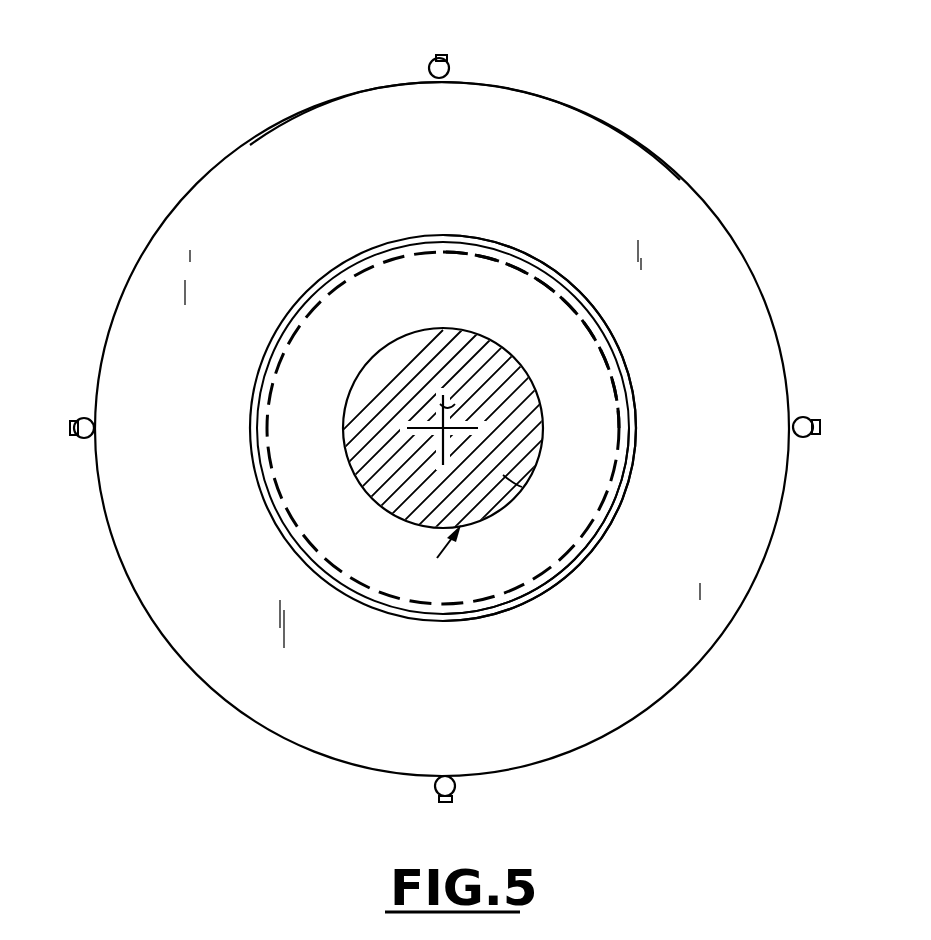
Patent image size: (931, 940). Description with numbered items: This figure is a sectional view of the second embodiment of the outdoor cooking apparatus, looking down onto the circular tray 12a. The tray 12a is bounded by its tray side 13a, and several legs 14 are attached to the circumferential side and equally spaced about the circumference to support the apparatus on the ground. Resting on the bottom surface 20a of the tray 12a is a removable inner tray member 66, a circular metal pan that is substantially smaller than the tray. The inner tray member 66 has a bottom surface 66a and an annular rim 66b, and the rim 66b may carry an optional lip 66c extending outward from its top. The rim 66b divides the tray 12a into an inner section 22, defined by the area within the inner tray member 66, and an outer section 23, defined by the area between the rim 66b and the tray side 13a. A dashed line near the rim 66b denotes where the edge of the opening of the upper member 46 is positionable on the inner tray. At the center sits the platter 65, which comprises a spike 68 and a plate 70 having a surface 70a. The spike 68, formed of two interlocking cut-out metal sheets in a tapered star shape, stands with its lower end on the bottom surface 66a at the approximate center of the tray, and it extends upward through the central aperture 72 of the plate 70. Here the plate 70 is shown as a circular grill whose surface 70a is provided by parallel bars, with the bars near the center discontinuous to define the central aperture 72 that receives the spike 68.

The tray 12a is at (149, 240).
The tray side 13a is at (300, 107).
The legs 14 is at (433, 58).
The bottom surface 20a is at (615, 177).
The inner section 22 is at (459, 309).
The outer section 23 is at (459, 169).
The upper member 46 is at (538, 272).
The platter 65 is at (430, 553).
The inner tray member 66 is at (620, 520).
The bottom surface 66a is at (488, 563).
The annular rim 66b is at (585, 556).
The lip 66c is at (553, 582).
The spike 68 is at (455, 404).
The plate 70 is at (527, 398).
The surface 70a is at (503, 475).
The central aperture 72 is at (432, 420).